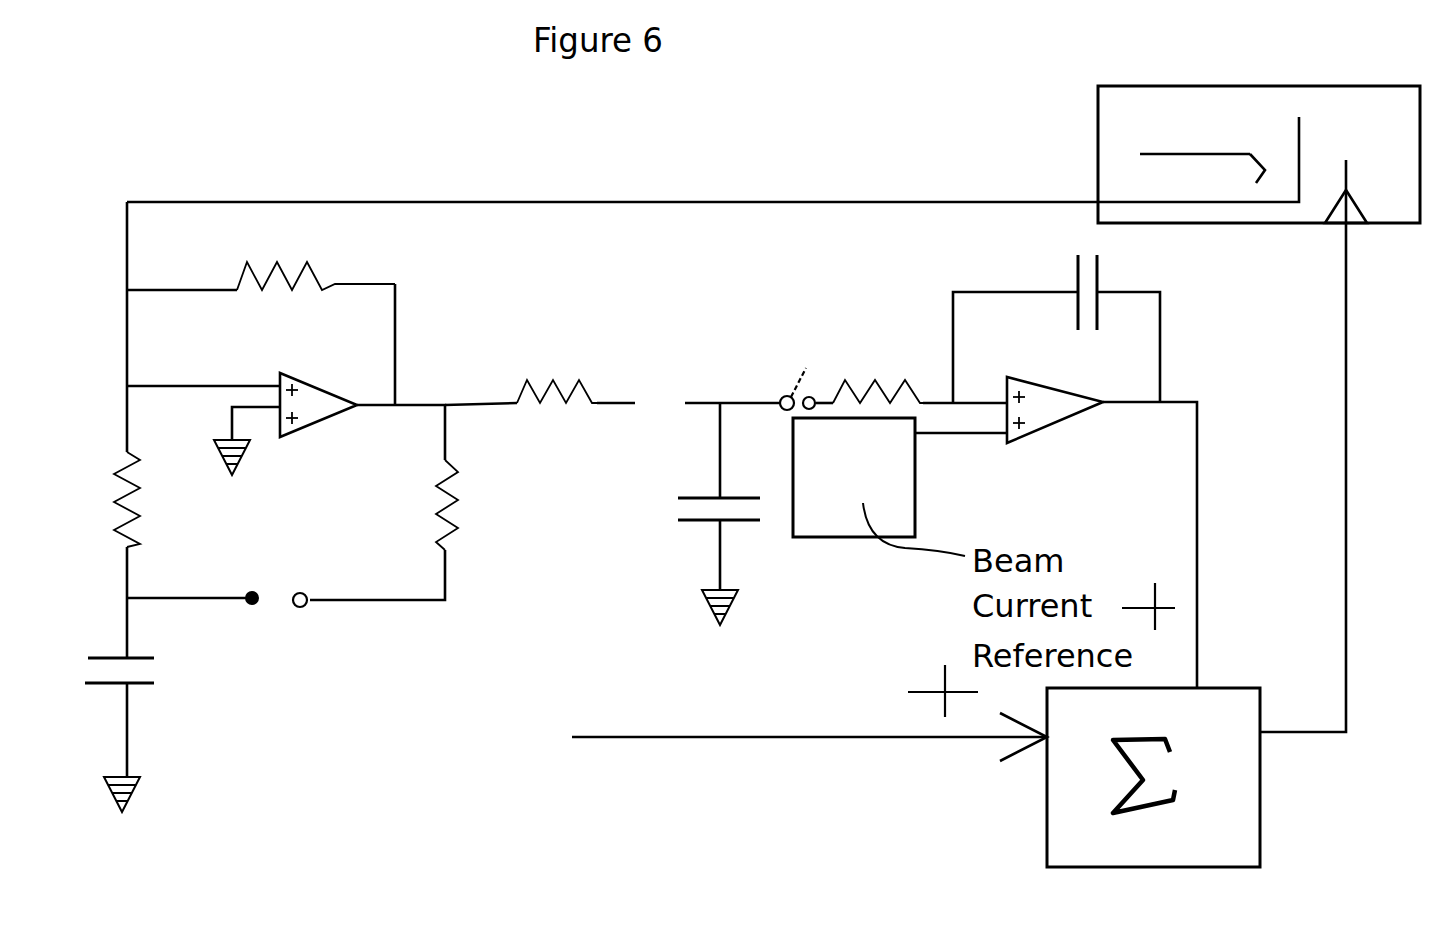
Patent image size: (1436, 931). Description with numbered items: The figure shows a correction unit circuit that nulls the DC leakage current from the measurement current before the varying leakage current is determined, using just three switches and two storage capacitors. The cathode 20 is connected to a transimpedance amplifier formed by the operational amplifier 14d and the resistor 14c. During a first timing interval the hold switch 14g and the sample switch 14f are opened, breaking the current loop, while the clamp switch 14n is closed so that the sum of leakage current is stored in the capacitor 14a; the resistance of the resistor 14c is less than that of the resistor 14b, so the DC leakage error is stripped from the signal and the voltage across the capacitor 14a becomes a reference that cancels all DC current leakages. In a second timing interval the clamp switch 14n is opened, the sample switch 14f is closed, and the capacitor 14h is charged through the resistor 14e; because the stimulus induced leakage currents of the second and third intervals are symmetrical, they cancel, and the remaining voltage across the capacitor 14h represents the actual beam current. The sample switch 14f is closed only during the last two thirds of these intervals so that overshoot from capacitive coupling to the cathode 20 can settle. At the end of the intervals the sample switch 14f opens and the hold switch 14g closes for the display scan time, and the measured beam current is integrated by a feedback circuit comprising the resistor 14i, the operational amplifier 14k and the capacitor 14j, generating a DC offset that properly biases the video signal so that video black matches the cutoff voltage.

The capacitor 14a is at (133, 695).
The resistor 14b is at (172, 500).
The resistor 14c is at (332, 283).
The operational amplifier 14d is at (335, 377).
The resistor 14e is at (548, 378).
The sample switch 14f is at (787, 363).
The hold switch 14g is at (918, 365).
The capacitor 14h is at (740, 535).
The resistor 14i is at (1042, 275).
The capacitor 14j is at (1090, 258).
The operational amplifier 14k is at (570, 468).
The clamp switch 14n is at (273, 608).
The cathode 20 is at (1258, 205).